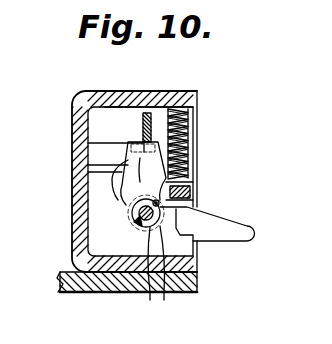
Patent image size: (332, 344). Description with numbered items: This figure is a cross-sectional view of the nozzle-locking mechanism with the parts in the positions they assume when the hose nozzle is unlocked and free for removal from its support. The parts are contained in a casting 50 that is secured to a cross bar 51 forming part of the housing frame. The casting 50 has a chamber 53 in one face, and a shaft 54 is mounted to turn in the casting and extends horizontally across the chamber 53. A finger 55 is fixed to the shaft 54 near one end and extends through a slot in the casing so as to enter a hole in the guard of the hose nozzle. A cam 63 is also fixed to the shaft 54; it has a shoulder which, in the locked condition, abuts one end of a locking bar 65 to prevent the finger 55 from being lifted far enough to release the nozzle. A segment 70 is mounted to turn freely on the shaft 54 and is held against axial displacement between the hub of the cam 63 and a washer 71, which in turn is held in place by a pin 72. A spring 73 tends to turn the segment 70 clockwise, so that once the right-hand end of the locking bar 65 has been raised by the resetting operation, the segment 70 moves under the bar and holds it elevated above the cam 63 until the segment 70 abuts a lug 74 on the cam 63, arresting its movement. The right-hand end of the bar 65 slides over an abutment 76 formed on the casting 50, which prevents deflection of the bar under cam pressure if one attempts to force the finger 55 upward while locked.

The casting 50 is at (72, 168).
The cross bar 51 is at (100, 284).
The chamber 53 is at (108, 112).
The shaft 54 is at (168, 298).
The finger 55 is at (250, 230).
The cam 63 is at (117, 187).
The locking bar 65 is at (143, 124).
The segment 70 is at (128, 192).
The washer 71 is at (137, 226).
The pin 72 is at (126, 291).
The spring 73 is at (188, 153).
The lug 74 is at (191, 190).
The abutment 76 is at (103, 147).